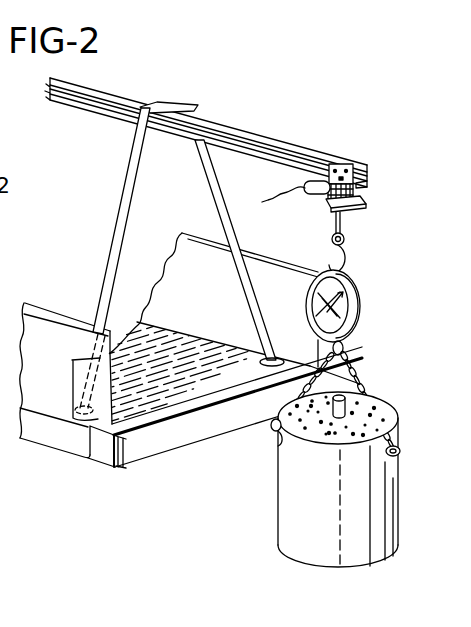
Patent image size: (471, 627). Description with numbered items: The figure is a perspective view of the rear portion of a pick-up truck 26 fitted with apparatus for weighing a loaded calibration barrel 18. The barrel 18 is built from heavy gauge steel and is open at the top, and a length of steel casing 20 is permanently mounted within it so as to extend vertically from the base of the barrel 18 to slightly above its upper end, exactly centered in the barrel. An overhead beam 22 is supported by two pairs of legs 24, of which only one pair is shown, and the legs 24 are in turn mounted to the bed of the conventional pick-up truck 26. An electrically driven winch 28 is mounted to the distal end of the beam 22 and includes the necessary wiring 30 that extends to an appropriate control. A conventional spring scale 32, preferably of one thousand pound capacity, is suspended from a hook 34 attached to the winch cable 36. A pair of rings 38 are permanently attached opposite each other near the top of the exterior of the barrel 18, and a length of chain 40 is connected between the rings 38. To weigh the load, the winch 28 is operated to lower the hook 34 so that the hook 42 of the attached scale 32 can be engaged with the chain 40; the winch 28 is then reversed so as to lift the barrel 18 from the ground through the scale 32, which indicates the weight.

The calibration barrel 18 is at (290, 517).
The steel casing 20 is at (347, 408).
The overhead beam 22 is at (253, 134).
The legs 24 is at (204, 190).
The pick-up truck 26 is at (204, 362).
The winch 28 is at (356, 192).
The wiring 30 is at (292, 194).
The spring scale 32 is at (361, 298).
The hook 34 is at (347, 236).
The winch cable 36 is at (342, 222).
The rings 38 is at (277, 434).
The chain 40 is at (356, 376).
The hook of scale 42 is at (340, 344).